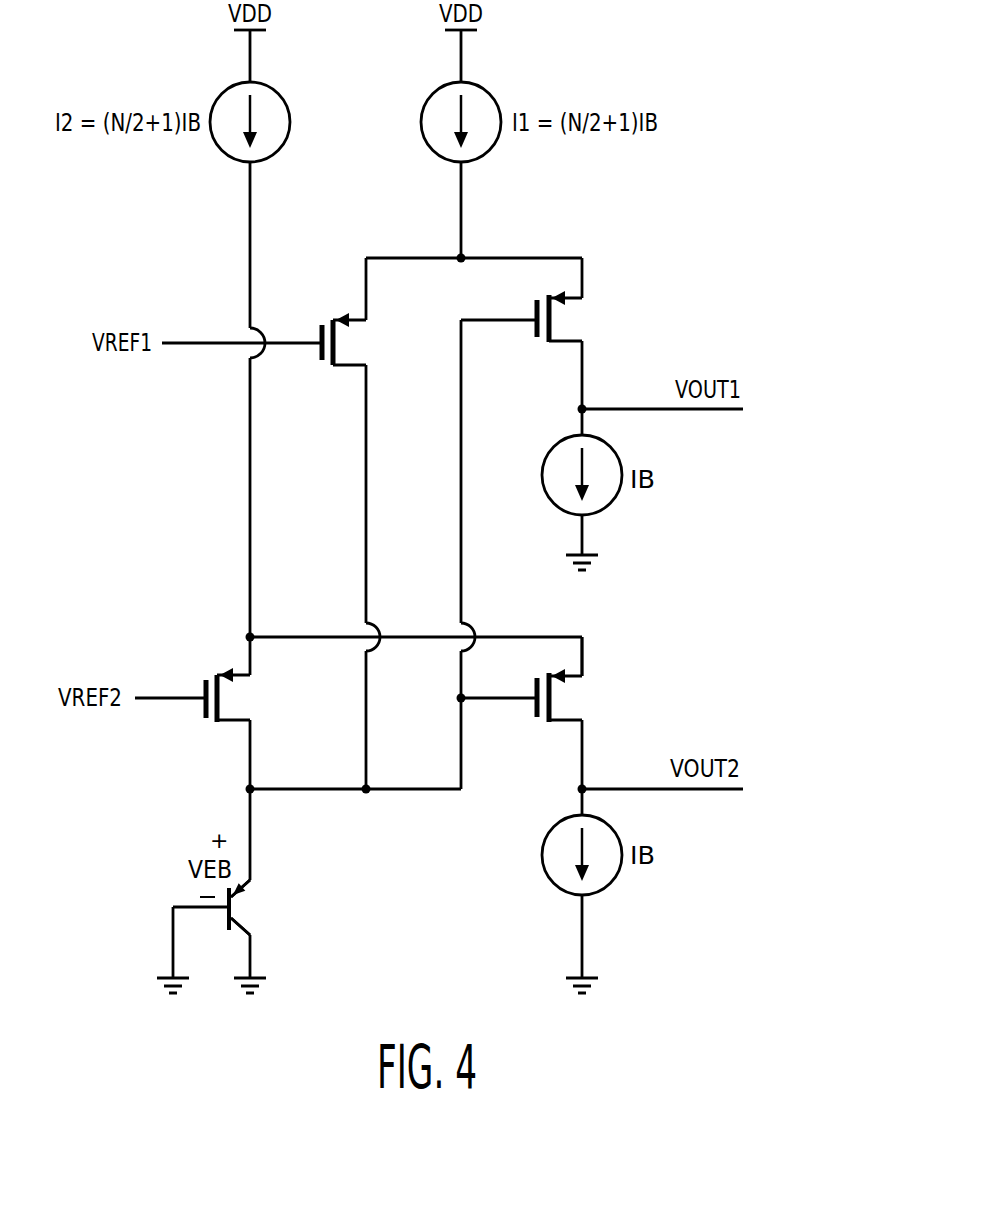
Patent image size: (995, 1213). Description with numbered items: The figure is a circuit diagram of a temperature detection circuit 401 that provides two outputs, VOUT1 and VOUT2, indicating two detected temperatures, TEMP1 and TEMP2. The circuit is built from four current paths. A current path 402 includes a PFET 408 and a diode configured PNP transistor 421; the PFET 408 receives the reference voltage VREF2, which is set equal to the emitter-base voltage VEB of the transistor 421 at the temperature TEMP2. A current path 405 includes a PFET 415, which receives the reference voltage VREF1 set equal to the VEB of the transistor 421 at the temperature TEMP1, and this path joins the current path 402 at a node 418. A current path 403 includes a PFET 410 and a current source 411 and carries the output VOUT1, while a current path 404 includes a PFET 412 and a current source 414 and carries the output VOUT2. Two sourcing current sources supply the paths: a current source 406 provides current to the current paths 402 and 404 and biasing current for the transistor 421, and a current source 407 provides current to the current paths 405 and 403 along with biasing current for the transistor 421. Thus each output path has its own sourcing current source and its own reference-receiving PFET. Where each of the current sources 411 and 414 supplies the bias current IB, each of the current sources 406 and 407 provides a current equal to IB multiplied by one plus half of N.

The temperature detection circuit 401 is at (713, 153).
The current path 402 is at (241, 626).
The current path 403 is at (590, 246).
The current path 404 is at (602, 622).
The current path 405 is at (360, 247).
The current source 406 is at (222, 92).
The current source 407 is at (490, 95).
The PFET 408 is at (222, 700).
The PFET 410 is at (553, 320).
The current source 411 is at (545, 456).
The PFET 412 is at (553, 700).
The current source 414 is at (545, 838).
The PFET 415 is at (338, 350).
The node 418 is at (254, 791).
The diode configured PNP transistor 421 is at (240, 925).